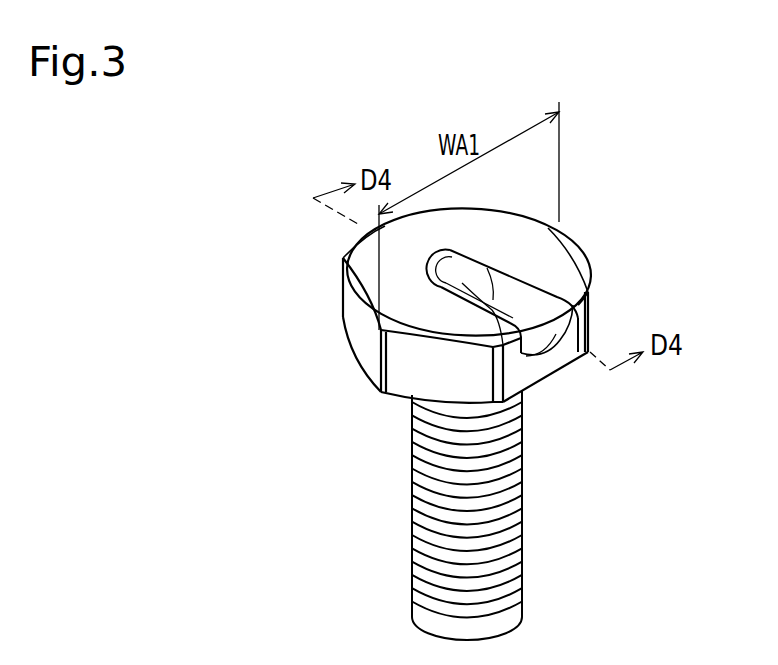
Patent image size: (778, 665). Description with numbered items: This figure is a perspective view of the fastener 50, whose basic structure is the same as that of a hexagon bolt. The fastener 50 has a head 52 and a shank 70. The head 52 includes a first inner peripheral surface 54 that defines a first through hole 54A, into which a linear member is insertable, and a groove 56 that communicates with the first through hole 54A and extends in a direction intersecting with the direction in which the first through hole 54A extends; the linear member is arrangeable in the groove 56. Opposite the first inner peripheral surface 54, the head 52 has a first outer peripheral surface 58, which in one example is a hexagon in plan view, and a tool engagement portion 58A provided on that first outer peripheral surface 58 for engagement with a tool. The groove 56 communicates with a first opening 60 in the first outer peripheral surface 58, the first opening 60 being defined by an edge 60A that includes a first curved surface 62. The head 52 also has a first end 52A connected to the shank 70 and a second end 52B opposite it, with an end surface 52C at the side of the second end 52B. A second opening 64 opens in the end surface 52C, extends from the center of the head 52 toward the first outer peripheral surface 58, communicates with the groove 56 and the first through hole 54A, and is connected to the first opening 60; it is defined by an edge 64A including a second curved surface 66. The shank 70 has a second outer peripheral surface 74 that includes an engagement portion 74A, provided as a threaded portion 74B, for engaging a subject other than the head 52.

The fastener 50 is at (632, 170).
The head 52 is at (629, 281).
The first end 52A is at (343, 318).
The second end 52B is at (343, 258).
The end surface 52C is at (568, 251).
The first inner peripheral surface 54 is at (442, 341).
The first through hole 54A is at (467, 280).
The groove 56 is at (527, 310).
The first outer peripheral surface 58 is at (381, 393).
The tool engagement portion 58A is at (363, 343).
The first opening 60 is at (579, 371).
The edge 60A is at (557, 357).
The first curved surface 62 is at (588, 325).
The second opening 64 is at (491, 266).
The edge 64A is at (500, 263).
The second curved surface 66 is at (431, 258).
The shank 70 is at (562, 598).
The second outer peripheral surface 74 is at (522, 500).
The engagement portion 74A is at (421, 510).
The threaded portion 74B is at (410, 503).